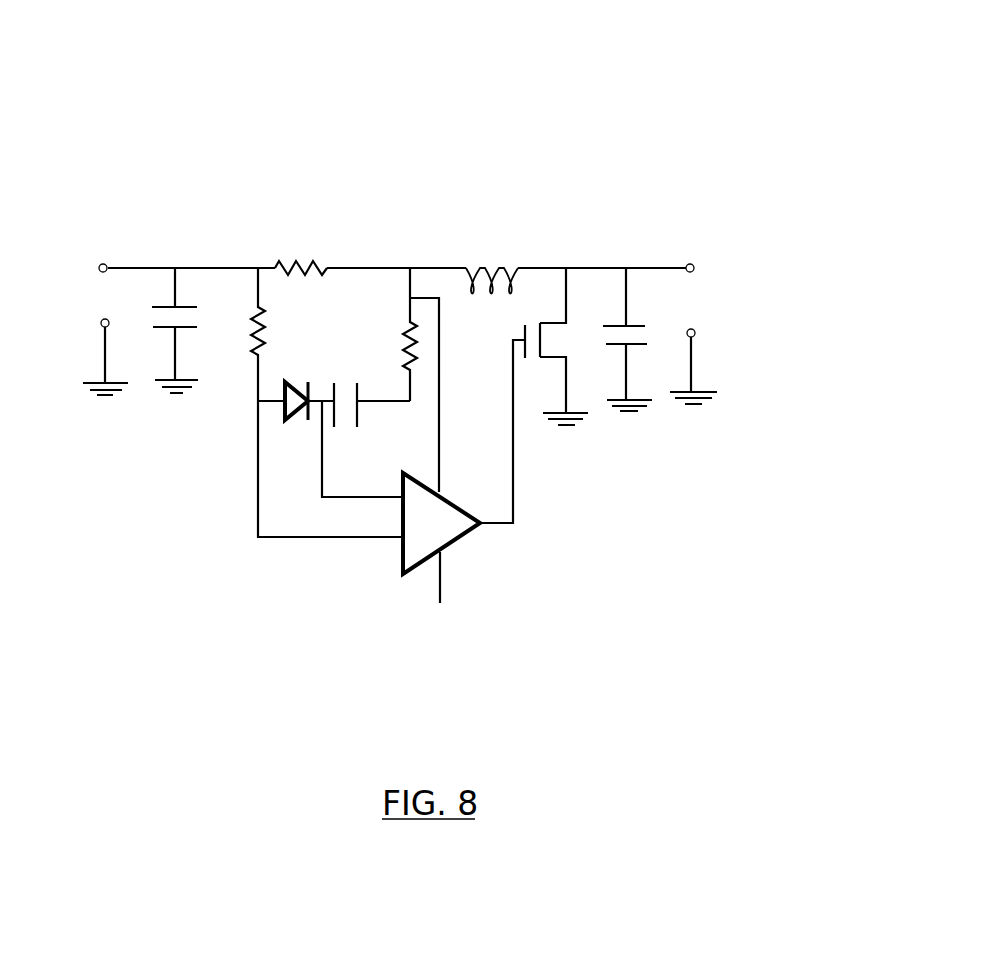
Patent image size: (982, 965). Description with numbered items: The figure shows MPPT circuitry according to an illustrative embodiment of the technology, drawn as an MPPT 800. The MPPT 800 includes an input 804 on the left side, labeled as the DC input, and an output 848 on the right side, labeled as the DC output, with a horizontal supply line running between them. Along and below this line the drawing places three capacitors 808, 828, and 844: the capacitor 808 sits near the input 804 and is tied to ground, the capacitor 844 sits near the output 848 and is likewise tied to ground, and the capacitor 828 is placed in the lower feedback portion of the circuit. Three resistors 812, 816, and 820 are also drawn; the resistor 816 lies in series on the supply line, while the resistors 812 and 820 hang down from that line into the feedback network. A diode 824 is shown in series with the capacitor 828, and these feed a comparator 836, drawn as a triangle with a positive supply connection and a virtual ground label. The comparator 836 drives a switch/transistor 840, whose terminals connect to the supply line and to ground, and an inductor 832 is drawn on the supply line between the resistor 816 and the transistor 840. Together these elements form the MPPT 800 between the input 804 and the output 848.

The MPPT 800 is at (720, 115).
The input 804 is at (106, 264).
The capacitor 808 is at (194, 320).
The resistor 812 is at (258, 335).
The resistor 816 is at (292, 262).
The resistor 820 is at (408, 330).
The diode 824 is at (285, 406).
The capacitor 828 is at (345, 429).
The inductor 832 is at (483, 268).
The comparator 836 is at (460, 537).
The switch/transistor 840 is at (566, 362).
The capacitor 844 is at (630, 325).
The output 848 is at (695, 266).